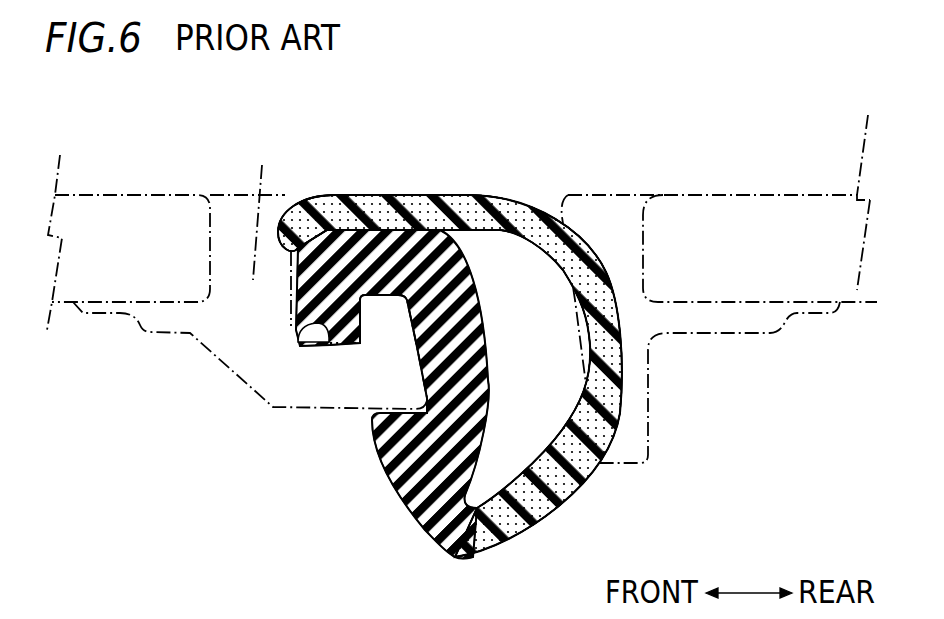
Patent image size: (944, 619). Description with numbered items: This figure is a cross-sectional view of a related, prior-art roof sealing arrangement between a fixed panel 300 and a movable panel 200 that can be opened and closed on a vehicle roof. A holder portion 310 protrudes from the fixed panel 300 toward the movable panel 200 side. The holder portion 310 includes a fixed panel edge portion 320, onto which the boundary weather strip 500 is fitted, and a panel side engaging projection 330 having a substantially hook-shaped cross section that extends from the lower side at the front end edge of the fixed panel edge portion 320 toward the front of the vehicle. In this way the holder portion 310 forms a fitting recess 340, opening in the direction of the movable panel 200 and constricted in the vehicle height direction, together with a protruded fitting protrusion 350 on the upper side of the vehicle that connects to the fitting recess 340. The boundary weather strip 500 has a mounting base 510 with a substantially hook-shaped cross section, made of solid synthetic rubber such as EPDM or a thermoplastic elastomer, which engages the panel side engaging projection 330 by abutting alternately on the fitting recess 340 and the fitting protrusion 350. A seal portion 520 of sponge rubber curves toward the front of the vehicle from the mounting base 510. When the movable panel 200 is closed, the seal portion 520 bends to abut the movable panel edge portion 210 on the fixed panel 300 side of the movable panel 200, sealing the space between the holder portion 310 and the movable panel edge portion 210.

The movable panel 200 is at (775, 178).
The movable panel edge portion 210 is at (613, 213).
The fixed panel 300 is at (107, 178).
The holder portion 310 is at (222, 195).
The fixed panel edge portion 320 is at (262, 165).
The panel side engaging projection 330 is at (338, 413).
The fitting recess 340 is at (318, 323).
The fitting protrusion 350 is at (383, 312).
The boundary weather strip 500 is at (465, 320).
The mounting base 510 is at (463, 360).
The seal portion 520 is at (543, 203).